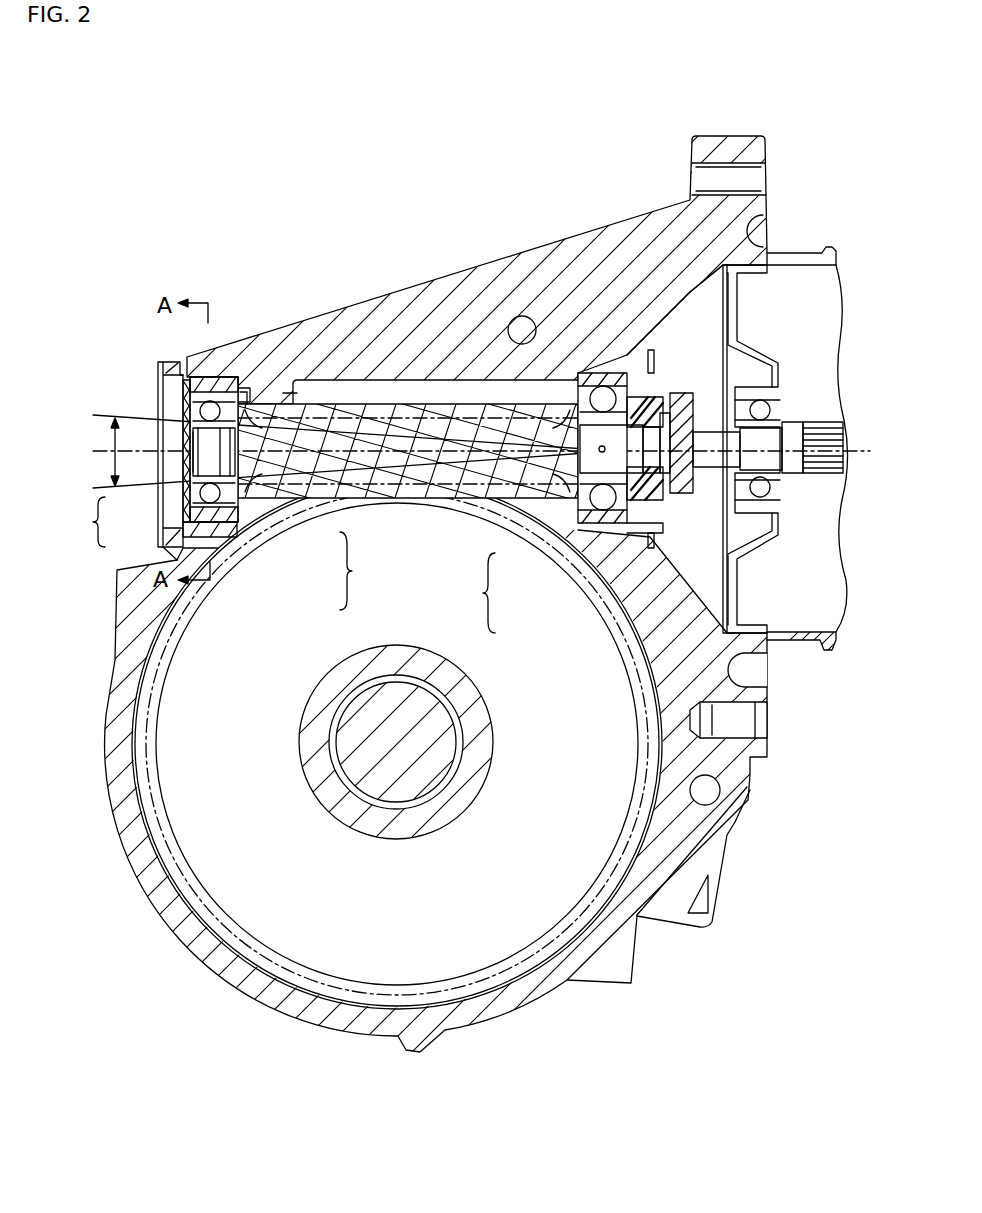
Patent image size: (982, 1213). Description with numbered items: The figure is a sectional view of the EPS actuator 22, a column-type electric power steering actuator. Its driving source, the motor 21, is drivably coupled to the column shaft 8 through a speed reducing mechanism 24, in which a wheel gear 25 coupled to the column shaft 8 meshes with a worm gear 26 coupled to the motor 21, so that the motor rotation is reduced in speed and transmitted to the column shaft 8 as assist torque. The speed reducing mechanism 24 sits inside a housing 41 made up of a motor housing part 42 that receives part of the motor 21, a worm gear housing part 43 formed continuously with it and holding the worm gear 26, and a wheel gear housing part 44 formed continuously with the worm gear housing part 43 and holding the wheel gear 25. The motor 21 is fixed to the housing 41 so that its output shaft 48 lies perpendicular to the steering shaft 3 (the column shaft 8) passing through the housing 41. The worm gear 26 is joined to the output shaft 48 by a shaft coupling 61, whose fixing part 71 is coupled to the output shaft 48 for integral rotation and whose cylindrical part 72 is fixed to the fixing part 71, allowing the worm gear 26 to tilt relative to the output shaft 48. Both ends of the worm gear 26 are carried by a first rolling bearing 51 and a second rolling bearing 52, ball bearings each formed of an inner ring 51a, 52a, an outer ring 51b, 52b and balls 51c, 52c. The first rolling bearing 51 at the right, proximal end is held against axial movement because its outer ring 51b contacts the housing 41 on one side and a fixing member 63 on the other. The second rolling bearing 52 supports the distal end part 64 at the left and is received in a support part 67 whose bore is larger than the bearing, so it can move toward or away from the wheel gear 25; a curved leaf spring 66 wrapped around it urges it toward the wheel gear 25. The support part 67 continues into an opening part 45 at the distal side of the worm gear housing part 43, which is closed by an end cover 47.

The EPS actuator 22 is at (180, 179).
The housing 41 is at (420, 286).
The motor housing part 42 is at (703, 302).
The worm gear housing part 43 is at (412, 380).
The motor 21 is at (789, 270).
The shaft coupling 61 is at (712, 387).
The output shaft 48 is at (795, 425).
The fixing member 63 is at (657, 354).
The fixing part 71 is at (706, 492).
The cylindrical part 72 is at (652, 538).
The wheel gear housing part 44 is at (660, 667).
The steering shaft 3 is at (409, 750).
The column shaft 8 is at (396, 742).
The first rolling bearing 51 is at (541, 505).
The inner ring 51a is at (582, 527).
The outer ring 51b is at (605, 552).
The balls 51c is at (597, 540).
The second rolling bearing 52 is at (291, 495).
The inner ring 52a is at (222, 515).
The outer ring 52b is at (237, 523).
The balls 52c is at (235, 525).
The speed reducing mechanism 24 is at (149, 549).
The wheel gear 25 is at (190, 630).
The worm gear 26 is at (190, 468).
The end cover 47 is at (160, 368).
The distal end part 64 is at (200, 443).
The opening part 45 is at (170, 378).
The curved leaf spring 66 is at (218, 378).
The support part 67 is at (238, 378).